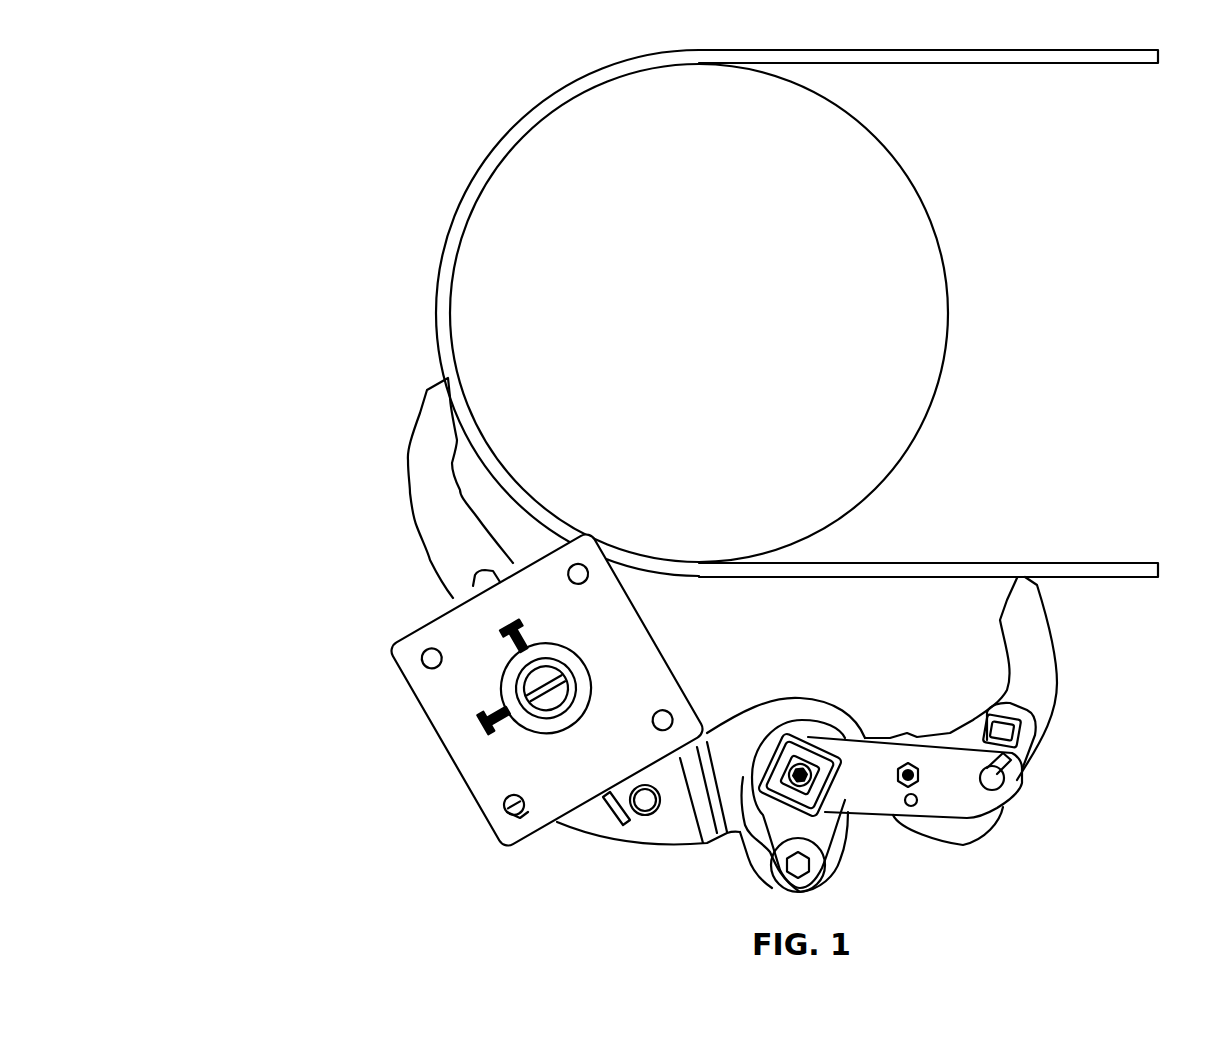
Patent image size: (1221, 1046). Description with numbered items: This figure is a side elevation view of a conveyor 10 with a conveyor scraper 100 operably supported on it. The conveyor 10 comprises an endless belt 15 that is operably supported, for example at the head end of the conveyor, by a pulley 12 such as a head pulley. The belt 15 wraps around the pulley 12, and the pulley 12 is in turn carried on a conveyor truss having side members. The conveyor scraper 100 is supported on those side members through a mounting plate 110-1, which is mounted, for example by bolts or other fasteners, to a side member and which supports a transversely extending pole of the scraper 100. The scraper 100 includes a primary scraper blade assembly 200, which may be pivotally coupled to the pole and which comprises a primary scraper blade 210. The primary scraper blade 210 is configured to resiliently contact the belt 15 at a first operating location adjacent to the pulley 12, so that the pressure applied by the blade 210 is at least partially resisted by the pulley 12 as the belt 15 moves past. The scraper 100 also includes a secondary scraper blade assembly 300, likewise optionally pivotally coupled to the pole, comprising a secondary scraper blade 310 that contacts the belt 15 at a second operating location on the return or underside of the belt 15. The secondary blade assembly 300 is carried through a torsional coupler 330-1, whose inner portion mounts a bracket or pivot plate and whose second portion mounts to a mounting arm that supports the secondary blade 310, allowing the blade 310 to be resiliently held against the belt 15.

The conveyor 10 is at (242, 147).
The pulley 12 is at (948, 320).
The endless belt 15 is at (468, 180).
The conveyor scraper 100 is at (302, 915).
The mounting plate 110-1 is at (385, 653).
The primary scraper blade assembly 200 is at (317, 503).
The primary scraper blade 210 is at (417, 417).
The secondary scraper blade assembly 300 is at (1103, 795).
The secondary scraper blade 310 is at (1057, 653).
The torsional coupler 330-1 is at (840, 790).